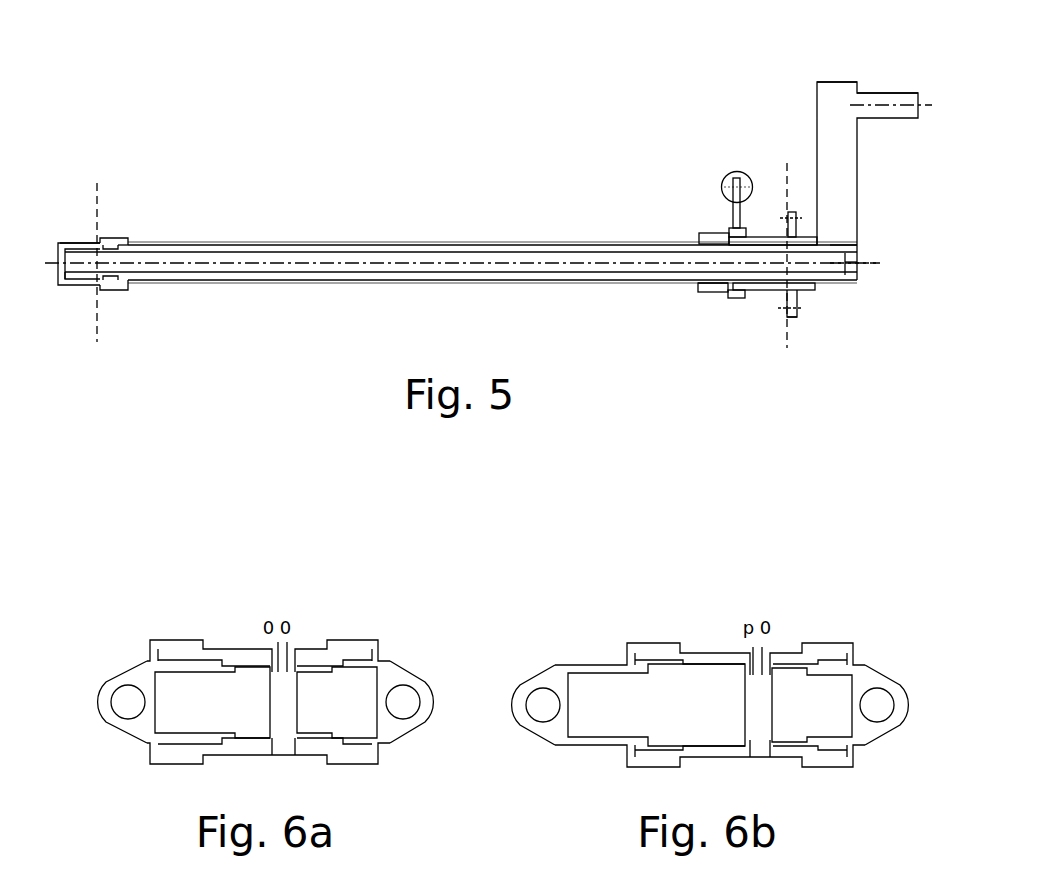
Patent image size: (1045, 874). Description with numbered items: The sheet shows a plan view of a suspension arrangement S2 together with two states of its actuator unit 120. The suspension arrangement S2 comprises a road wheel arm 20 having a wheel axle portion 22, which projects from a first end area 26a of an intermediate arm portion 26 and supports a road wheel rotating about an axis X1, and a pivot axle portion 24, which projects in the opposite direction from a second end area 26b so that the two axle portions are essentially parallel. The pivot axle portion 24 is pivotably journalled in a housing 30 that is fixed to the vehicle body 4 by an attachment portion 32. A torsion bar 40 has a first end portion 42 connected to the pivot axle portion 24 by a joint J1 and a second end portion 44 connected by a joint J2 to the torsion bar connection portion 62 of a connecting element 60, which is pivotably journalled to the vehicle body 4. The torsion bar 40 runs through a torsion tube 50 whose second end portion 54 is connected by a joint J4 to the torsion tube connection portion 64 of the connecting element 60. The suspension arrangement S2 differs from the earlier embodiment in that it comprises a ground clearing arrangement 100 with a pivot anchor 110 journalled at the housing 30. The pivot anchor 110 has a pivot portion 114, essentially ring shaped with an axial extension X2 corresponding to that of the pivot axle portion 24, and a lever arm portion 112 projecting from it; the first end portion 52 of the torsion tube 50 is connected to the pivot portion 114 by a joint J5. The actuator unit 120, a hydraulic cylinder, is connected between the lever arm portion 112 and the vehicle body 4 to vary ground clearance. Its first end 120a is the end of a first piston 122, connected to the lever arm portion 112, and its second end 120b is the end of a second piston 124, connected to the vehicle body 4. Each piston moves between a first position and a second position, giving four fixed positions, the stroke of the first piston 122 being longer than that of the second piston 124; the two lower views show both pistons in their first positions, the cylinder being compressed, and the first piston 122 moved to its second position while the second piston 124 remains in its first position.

In FIG. 5, the suspension arrangement S2 is at (352, 108).
In FIG. 5, the vehicle body 4 is at (99, 184).
In FIG. 5, the road wheel arm 20 is at (815, 156).
In FIG. 5, the wheel axle portion 22 is at (877, 93).
In FIG. 5, the pivot axle portion 24 is at (745, 298).
In FIG. 5, the intermediate arm portion 26 is at (857, 188).
In FIG. 5, the first end area 26a is at (817, 88).
In FIG. 5, the second end area 26b is at (858, 262).
In FIG. 5, the housing 30 is at (775, 294).
In FIG. 5, the attachment portion 32 is at (791, 320).
In FIG. 5, the torsion bar 40 is at (238, 278).
In FIG. 5, the first end portion 42 is at (856, 282).
In FIG. 5, the second end portion 44 is at (75, 268).
In FIG. 5, the torsion tube 50 is at (388, 287).
In FIG. 5, the first end portion 52 is at (703, 290).
In FIG. 5, the second end portion 54 is at (126, 283).
In FIG. 5, the connecting element 60 is at (58, 240).
In FIG. 5, the torsion bar connection portion 62 is at (80, 242).
In FIG. 5, the torsion tube connection portion 64 is at (107, 233).
In FIG. 5, the ground clearing arrangement 100 is at (730, 204).
In FIG. 5, the pivot anchor 110 is at (746, 229).
In FIG. 5, the lever arm portion 112 is at (733, 215).
In FIG. 5, the pivot portion 114 is at (727, 236).
In FIG. 5, the actuator unit 120 is at (730, 178).
In FIG. 6A, the actuator unit 120 is at (195, 595).
In FIG. 6B, the actuator unit 120 is at (615, 595).
In FIG. 6A, the first end 120a is at (100, 716).
In FIG. 6A, the second end 120b is at (430, 712).
In FIG. 6A, the first piston 122 is at (126, 666).
In FIG. 6B, the first piston 122 is at (540, 668).
In FIG. 6A, the second piston 124 is at (410, 736).
In FIG. 6B, the second piston 124 is at (878, 736).
In FIG. 5, the joint J1 is at (835, 243).
In FIG. 5, the joint J2 is at (85, 278).
In FIG. 5, the joint J4 is at (126, 233).
In FIG. 5, the joint J5 is at (712, 290).
In FIG. 5, the axis X1 is at (905, 105).
In FIG. 5, the axial extension X2 is at (855, 292).